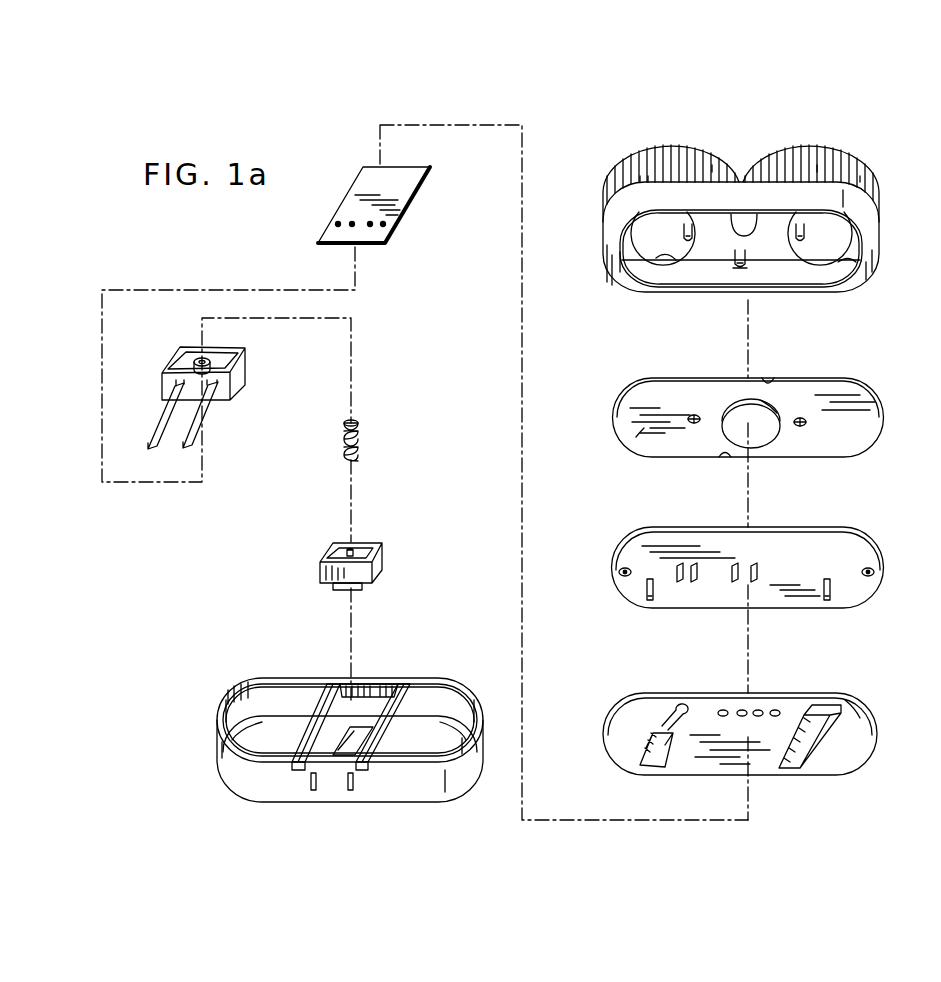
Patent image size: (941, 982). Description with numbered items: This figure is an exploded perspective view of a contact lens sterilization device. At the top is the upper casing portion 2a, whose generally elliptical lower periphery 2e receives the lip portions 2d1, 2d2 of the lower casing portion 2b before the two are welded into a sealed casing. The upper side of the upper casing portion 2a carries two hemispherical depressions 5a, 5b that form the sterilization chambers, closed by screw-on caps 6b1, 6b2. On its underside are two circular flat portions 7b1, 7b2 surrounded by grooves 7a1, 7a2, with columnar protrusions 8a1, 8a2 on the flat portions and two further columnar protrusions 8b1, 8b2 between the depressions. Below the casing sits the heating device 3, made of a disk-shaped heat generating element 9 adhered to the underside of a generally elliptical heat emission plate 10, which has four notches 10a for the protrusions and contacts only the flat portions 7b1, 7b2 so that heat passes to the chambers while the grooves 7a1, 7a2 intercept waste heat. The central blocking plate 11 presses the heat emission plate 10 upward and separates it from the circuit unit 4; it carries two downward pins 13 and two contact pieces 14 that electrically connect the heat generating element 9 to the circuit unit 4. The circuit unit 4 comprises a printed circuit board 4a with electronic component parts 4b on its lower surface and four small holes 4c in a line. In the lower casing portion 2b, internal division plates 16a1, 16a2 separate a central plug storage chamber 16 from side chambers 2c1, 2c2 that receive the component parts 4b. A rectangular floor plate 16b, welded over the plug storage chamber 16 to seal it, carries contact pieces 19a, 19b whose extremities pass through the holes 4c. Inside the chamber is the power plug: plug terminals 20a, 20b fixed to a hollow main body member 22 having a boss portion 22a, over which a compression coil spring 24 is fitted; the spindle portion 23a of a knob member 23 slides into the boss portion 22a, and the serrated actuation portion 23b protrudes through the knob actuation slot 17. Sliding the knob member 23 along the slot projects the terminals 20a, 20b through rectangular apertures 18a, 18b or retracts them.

The upper casing portion 2a is at (608, 238).
The lower periphery of the upper casing portion 2e is at (604, 252).
The cap 6b1 is at (668, 152).
The cap 6b2 is at (866, 180).
The hemispherical depression 5a is at (710, 165).
The hemispherical depression 5b is at (818, 155).
The groove 7a1 is at (648, 262).
The circular flat portion 7b1 is at (664, 262).
The columnar protrusion 8a1 is at (688, 260).
The columnar protrusion 8b1 is at (740, 268).
The columnar protrusion 8b2 is at (757, 214).
The groove 7a2 is at (806, 262).
The circular flat portion 7b2 is at (848, 262).
The columnar protrusion 8a2 is at (822, 262).
The heating device 3 is at (642, 378).
The heat generating element 9 is at (777, 410).
The through apertures or notches 10a is at (694, 415).
The heat emission plate 10 is at (636, 440).
The central blocking plate 11 is at (830, 520).
The pins 13 is at (647, 595).
The contact pieces 14 is at (679, 582).
The circuit unit 4 is at (664, 690).
The printed circuit board 4a is at (852, 712).
The electronic component parts 4b is at (652, 735).
The small holes 4c is at (723, 710).
The floor plate 16b is at (360, 198).
The contact piece 19a is at (335, 224).
The contact piece 19b is at (386, 224).
The main body member 22 is at (255, 370).
The boss portion 22a is at (202, 358).
The plug terminal 20a is at (150, 428).
The plug terminal 20b is at (200, 425).
The compression coil spring 24 is at (362, 440).
The knob member 23 is at (385, 542).
The spindle portion 23a is at (350, 549).
The actuation portion 23b is at (340, 590).
The lower casing portion 2b is at (218, 708).
The lip portion 2d1 is at (236, 692).
The lip portion 2d2 is at (460, 688).
The side chamber 2c1 is at (245, 755).
The side chamber 2c2 is at (458, 735).
The plug storage chamber 16 is at (358, 688).
The internal division plate 16a1 is at (318, 722).
The internal division plate 16a2 is at (404, 722).
The knob actuation slot 17 is at (360, 730).
The rectangular aperture 18a is at (318, 790).
The rectangular aperture 18b is at (355, 788).